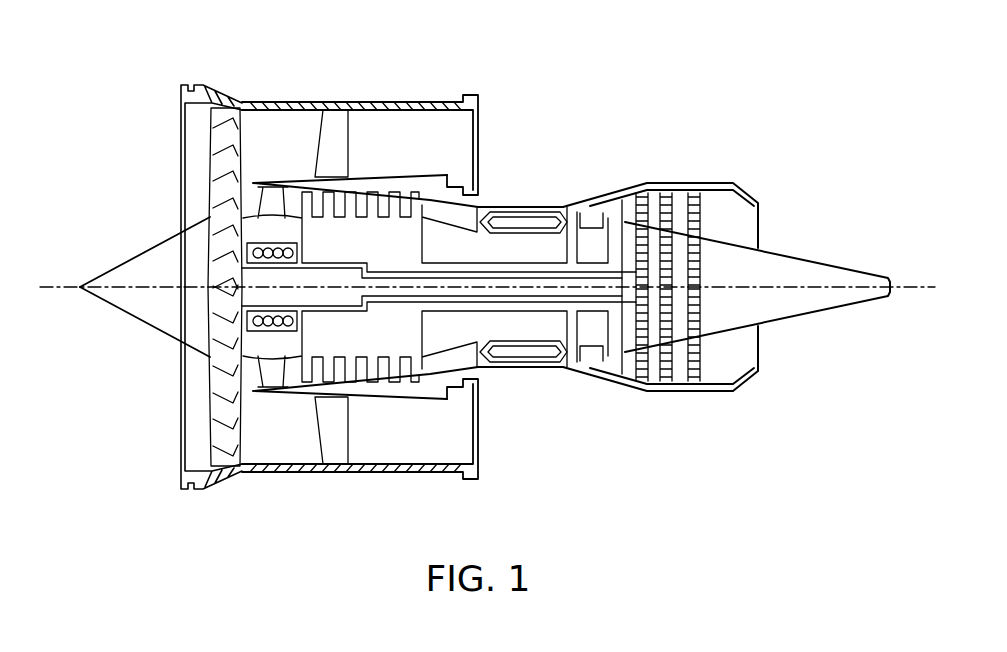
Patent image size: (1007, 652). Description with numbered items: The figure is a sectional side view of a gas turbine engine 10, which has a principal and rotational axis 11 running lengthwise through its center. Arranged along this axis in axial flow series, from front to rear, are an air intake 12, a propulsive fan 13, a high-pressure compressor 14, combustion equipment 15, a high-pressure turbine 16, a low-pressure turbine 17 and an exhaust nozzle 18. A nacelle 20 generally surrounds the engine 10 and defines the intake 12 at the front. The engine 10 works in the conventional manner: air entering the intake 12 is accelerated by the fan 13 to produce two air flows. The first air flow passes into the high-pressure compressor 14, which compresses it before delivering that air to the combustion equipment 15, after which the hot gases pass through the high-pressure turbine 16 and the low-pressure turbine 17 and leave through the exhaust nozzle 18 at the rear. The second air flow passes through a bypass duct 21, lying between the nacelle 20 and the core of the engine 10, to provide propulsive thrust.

The gas turbine engine 10 is at (485, 283).
The principal and rotational axis 11 is at (80, 284).
The air intake 12 is at (183, 152).
The propulsive fan 13 is at (240, 104).
The high-pressure compressor 14 is at (402, 230).
The combustion equipment 15 is at (510, 220).
The high-pressure turbine 16 is at (615, 198).
The low-pressure turbine 17 is at (702, 230).
The exhaust nozzle 18 is at (745, 228).
The nacelle 20 is at (283, 473).
The bypass duct 21 is at (388, 453).